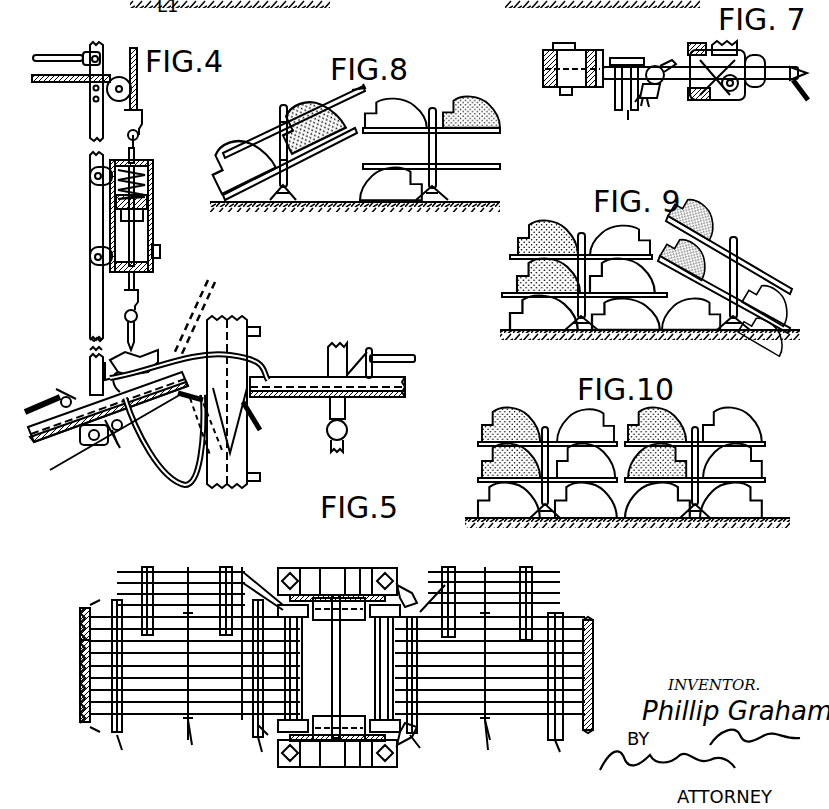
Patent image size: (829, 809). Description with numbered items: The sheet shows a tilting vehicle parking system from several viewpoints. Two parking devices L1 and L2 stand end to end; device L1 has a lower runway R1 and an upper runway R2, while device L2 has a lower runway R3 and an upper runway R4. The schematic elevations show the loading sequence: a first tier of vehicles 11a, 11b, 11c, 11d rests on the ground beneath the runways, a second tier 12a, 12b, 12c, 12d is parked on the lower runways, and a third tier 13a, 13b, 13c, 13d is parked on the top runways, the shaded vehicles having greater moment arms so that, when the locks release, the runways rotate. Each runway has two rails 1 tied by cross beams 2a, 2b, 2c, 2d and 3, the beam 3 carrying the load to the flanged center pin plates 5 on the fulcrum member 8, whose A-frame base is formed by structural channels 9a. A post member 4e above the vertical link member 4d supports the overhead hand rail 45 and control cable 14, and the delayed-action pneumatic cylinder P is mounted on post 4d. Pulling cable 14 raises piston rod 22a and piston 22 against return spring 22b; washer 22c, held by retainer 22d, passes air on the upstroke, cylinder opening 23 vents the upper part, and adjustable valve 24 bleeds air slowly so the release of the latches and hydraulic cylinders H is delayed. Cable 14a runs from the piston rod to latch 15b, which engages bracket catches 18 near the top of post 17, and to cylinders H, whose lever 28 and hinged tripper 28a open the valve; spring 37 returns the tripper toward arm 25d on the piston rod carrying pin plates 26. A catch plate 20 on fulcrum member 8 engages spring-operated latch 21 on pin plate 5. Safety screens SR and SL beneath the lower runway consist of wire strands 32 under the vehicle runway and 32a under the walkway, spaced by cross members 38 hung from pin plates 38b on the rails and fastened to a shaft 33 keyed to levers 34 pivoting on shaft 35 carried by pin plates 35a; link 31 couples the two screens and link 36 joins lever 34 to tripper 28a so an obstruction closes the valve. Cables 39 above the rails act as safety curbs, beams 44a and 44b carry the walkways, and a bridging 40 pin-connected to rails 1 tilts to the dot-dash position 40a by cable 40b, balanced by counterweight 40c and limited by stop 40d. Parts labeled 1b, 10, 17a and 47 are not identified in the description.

In FIG. 4, the rails 1 is at (38, 440).
In FIG. 5, the rails 1 is at (90, 608).
In FIG. 4, the rail hanger bracket 1b is at (320, 395).
In FIG. 5, the cross beam 2a is at (112, 728).
In FIG. 5, the cross beam 2b is at (253, 730).
In FIG. 5, the cross beam 2c is at (418, 730).
In FIG. 4, the cross beam 2d is at (82, 438).
In FIG. 5, the cross beam 2d is at (552, 740).
In FIG. 5, the beam 3 is at (340, 630).
In FIG. 4, the vertical link or post member 4d is at (90, 318).
In FIG. 4, the post member 4e is at (345, 345).
In FIG. 7, the flanged center pin plate 5 is at (543, 55).
In FIG. 7, the fulcrum member 8 is at (551, 45).
In FIG. 5, the fulcrum member 8 is at (340, 575).
In FIG. 5, the structural channel 9a is at (308, 570).
In FIG. 5, the end plate 10 is at (80, 650).
In FIG. 9, the first tier vehicle 11a is at (626, 314).
In FIG. 10, the first tier vehicle 11a is at (586, 500).
In FIG. 9, the first tier vehicle 11b is at (544, 312).
In FIG. 10, the first tier vehicle 11b is at (509, 500).
In FIG. 8, the first tier vehicle 11c is at (391, 184).
In FIG. 9, the first tier vehicle 11c is at (691, 314).
In FIG. 10, the first tier vehicle 11c is at (657, 500).
In FIG. 10, the first tier vehicle 11d is at (731, 500).
In FIG. 8, the second tier vehicle 12a is at (310, 122).
In FIG. 9, the second tier vehicle 12a is at (622, 275).
In FIG. 10, the second tier vehicle 12a is at (586, 460).
In FIG. 8, the second tier vehicle 12b is at (239, 161).
In FIG. 9, the second tier vehicle 12b is at (548, 275).
In FIG. 10, the second tier vehicle 12b is at (511, 460).
In FIG. 9, the second tier vehicle 12c is at (687, 257).
In FIG. 10, the second tier vehicle 12c is at (657, 460).
In FIG. 9, the second tier vehicle 12d is at (765, 333).
In FIG. 10, the second tier vehicle 12d is at (732, 460).
In FIG. 9, the third tier vehicle 13a is at (620, 240).
In FIG. 10, the third tier vehicle 13a is at (585, 425).
In FIG. 9, the third tier vehicle 13b is at (548, 237).
In FIG. 10, the third tier vehicle 13b is at (511, 424).
In FIG. 8, the third tier vehicle 13c is at (396, 113).
In FIG. 9, the third tier vehicle 13c is at (698, 218).
In FIG. 10, the third tier vehicle 13c is at (657, 424).
In FIG. 8, the third tier vehicle 13d is at (471, 112).
In FIG. 9, the third tier vehicle 13d is at (770, 304).
In FIG. 10, the third tier vehicle 13d is at (732, 424).
In FIG. 4, the control cable 14 is at (48, 77).
In FIG. 4, the cable 14a is at (142, 321).
In FIG. 7, the cable 14a is at (797, 100).
In FIG. 4, the latch 15b is at (196, 424).
In FIG. 4, the post 17 is at (243, 318).
In FIG. 4, the peg 17a is at (258, 475).
In FIG. 4, the bracket catches 18 is at (256, 420).
In FIG. 7, the catch plate 20 is at (593, 48).
In FIG. 7, the spring operated latch 21 is at (591, 88).
In FIG. 4, the piston 22 is at (148, 198).
In FIG. 4, the piston rod 22a is at (137, 143).
In FIG. 4, the return spring 22b is at (125, 200).
In FIG. 4, the washer 22c is at (128, 213).
In FIG. 4, the retainer 22d is at (129, 225).
In FIG. 4, the cylinder opening 23 is at (150, 170).
In FIG. 4, the adjustable valve 24 is at (160, 252).
In FIG. 7, the arm 25d is at (775, 62).
In FIG. 7, the pin plates 26 is at (702, 101).
In FIG. 7, the lever 28 is at (750, 88).
In FIG. 7, the hinged tripper 28a is at (722, 100).
In FIG. 7, the link 31 is at (567, 88).
In FIG. 4, the wire strands 32 is at (85, 460).
In FIG. 7, the wire strands 32 is at (654, 110).
In FIG. 5, the wire strands 32 is at (348, 745).
In FIG. 5, the wire 32a is at (176, 570).
In FIG. 7, the shaft 33 is at (636, 115).
In FIG. 5, the shaft 33 is at (297, 697).
In FIG. 7, the levers 34 is at (657, 90).
In FIG. 7, the shaft 35 is at (616, 105).
In FIG. 5, the shaft 35 is at (300, 655).
In FIG. 7, the pin plates 35a is at (633, 56).
In FIG. 7, the link 36 is at (660, 66).
In FIG. 7, the spring 37 is at (738, 56).
In FIG. 4, the cross members 38 is at (118, 432).
In FIG. 5, the cross members 38 is at (338, 739).
In FIG. 4, the pin plates 38b is at (132, 450).
In FIG. 4, the cables 39 is at (38, 410).
In FIG. 4, the bridging 40 is at (240, 356).
In FIG. 5, the bridging 40 is at (593, 634).
In FIG. 4, the dot-dash outline 40a is at (210, 292).
In FIG. 4, the cable 40b is at (165, 483).
In FIG. 4, the counterweight 40c is at (150, 355).
In FIG. 4, the limit stop 40d is at (105, 372).
In FIG. 5, the beam 44a is at (228, 566).
In FIG. 5, the beam 44b is at (142, 570).
In FIG. 4, the overhead hand rail 45 is at (68, 55).
In FIG. 5, the plate 47 is at (80, 665).
In FIG. 7, the hydraulic cylinder H is at (716, 102).
In FIG. 5, the hydraulic cylinder H is at (412, 585).
In FIG. 8, the parking device L1 is at (280, 112).
In FIG. 9, the parking device L1 is at (581, 234).
In FIG. 10, the parking device L1 is at (545, 428).
In FIG. 8, the parking device L2 is at (432, 115).
In FIG. 9, the parking device L2 is at (734, 238).
In FIG. 10, the parking device L2 is at (695, 428).
In FIG. 4, the pneumatic cylinder P is at (153, 220).
In FIG. 4, the lower runway R1 is at (50, 450).
In FIG. 8, the lower runway R1 is at (337, 140).
In FIG. 9, the lower runway R1 is at (510, 294).
In FIG. 10, the lower runway R1 is at (478, 479).
In FIG. 5, the lower runway R1 is at (109, 777).
In FIG. 8, the upper runway R2 is at (328, 100).
In FIG. 9, the upper runway R2 is at (512, 255).
In FIG. 10, the upper runway R2 is at (478, 443).
In FIG. 8, the lower runway R3 is at (366, 170).
In FIG. 9, the lower runway R3 is at (672, 266).
In FIG. 10, the lower runway R3 is at (768, 477).
In FIG. 4, the upper runway R4 is at (285, 360).
In FIG. 8, the upper runway R4 is at (398, 133).
In FIG. 9, the upper runway R4 is at (680, 226).
In FIG. 10, the upper runway R4 is at (765, 444).
In FIG. 5, the safety screen SL is at (199, 779).
In FIG. 4, the safety screen SR is at (92, 498).
In FIG. 5, the safety screen SR is at (521, 787).